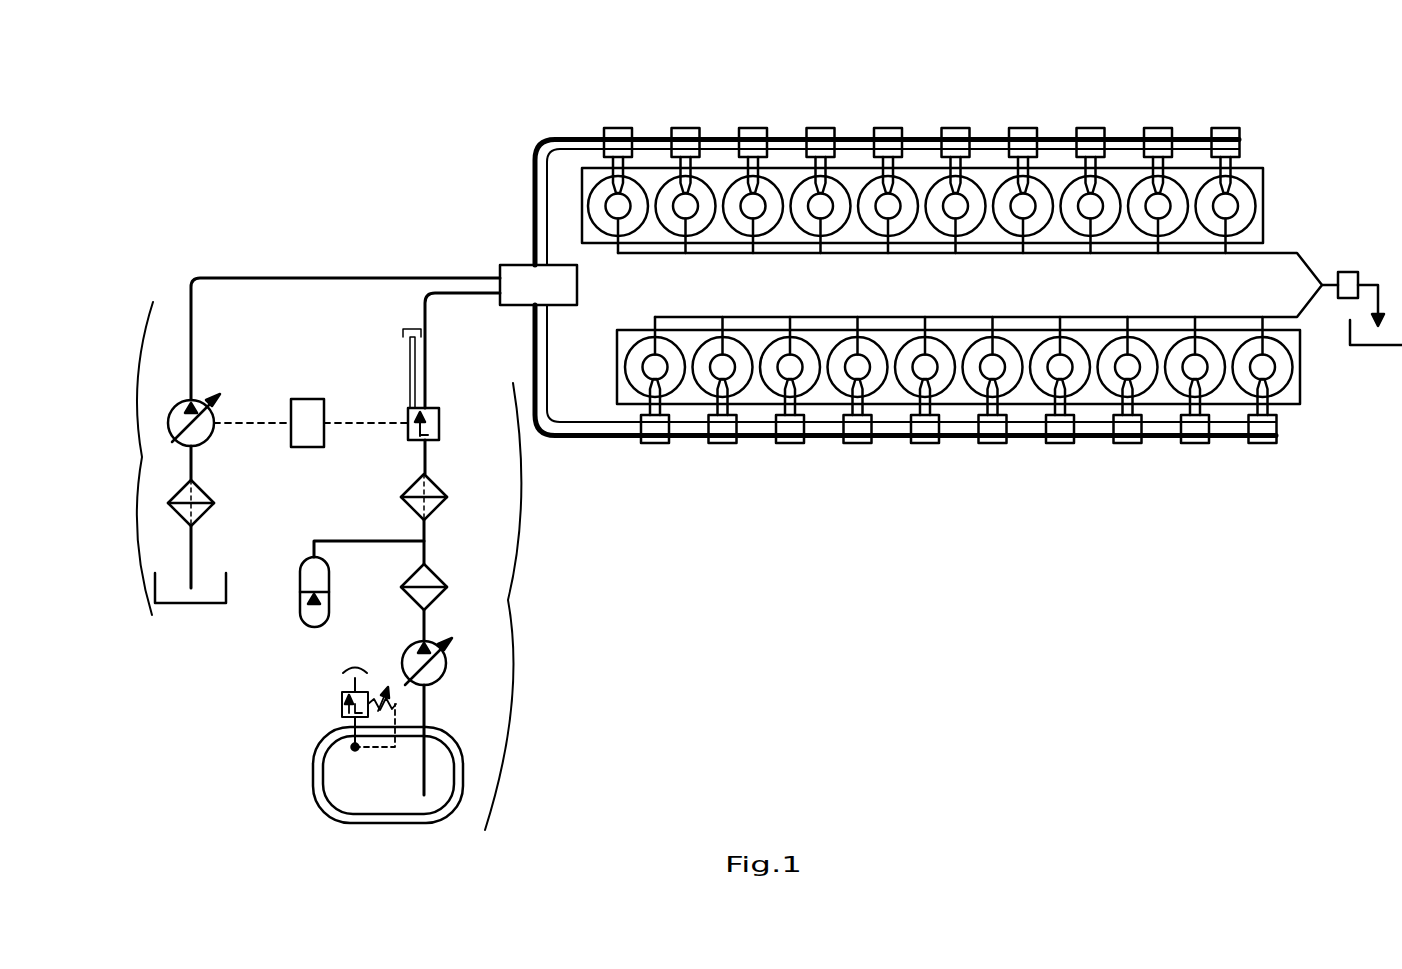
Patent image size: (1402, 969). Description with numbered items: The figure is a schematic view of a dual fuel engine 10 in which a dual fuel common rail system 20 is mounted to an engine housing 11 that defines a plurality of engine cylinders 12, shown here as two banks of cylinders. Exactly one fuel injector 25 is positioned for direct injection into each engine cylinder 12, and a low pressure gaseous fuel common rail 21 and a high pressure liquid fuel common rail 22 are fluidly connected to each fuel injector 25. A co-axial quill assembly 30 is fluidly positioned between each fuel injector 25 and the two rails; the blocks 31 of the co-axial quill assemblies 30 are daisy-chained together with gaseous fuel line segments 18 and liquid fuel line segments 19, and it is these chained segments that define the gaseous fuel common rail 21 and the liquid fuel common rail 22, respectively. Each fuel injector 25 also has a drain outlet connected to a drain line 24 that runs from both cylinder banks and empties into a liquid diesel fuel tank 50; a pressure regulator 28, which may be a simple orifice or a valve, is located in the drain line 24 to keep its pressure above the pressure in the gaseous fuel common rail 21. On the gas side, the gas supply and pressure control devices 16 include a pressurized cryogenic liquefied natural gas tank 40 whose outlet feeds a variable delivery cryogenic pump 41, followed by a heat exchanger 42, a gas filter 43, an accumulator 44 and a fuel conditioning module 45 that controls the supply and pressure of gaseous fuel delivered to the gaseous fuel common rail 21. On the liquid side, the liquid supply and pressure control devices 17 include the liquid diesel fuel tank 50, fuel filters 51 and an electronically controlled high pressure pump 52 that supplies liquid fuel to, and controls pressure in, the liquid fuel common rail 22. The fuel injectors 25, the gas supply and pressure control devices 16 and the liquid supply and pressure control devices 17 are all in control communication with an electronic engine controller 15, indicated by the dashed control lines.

The dual fuel engine 10 is at (909, 297).
The engine housing 11 is at (600, 243).
The engine cylinder 12 is at (731, 224).
The electronic engine controller 15 is at (309, 399).
The gas supply and pressure control devices 16 is at (511, 606).
The liquid supply and pressure control devices 17 is at (133, 458).
The gaseous fuel line segments 18 is at (988, 151).
The liquid fuel line segments 19 is at (1060, 132).
The dual fuel common rail system 20 is at (932, 100).
The low pressure gaseous fuel common rail 21 is at (793, 136).
The high pressure liquid fuel common rail 22 is at (990, 136).
The drain line 24 is at (1300, 252).
The fuel injector 25 is at (826, 217).
The pressure regulator 28 is at (1360, 276).
The co-axial quill assembly 30 is at (824, 120).
The block 31 is at (757, 128).
The pressurized cryogenic liquefied natural gas tank 40 is at (463, 770).
The variable delivery cryogenic pump 41 is at (459, 662).
The heat exchanger 42 is at (446, 582).
The gas filter 43 is at (446, 490).
The accumulator 44 is at (330, 580).
The fuel conditioning module 45 is at (440, 418).
The liquid diesel fuel tank 50 is at (1375, 346).
The fuel filters 51 is at (212, 495).
The electronically controlled high pressure pump 52 is at (212, 436).